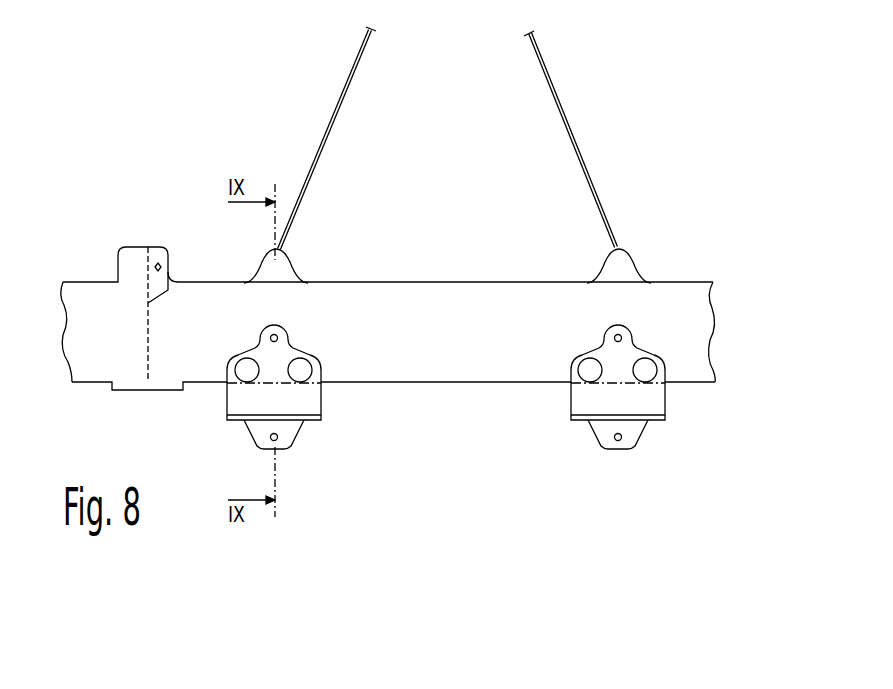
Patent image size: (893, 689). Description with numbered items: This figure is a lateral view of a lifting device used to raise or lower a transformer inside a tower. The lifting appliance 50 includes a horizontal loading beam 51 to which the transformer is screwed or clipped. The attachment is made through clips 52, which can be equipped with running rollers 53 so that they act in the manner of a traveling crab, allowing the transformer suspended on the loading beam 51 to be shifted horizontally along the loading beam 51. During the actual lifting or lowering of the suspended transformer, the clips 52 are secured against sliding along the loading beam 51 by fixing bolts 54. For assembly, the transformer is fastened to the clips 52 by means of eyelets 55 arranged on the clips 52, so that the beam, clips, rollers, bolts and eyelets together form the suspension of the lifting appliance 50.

The lifting appliance 50 is at (585, 157).
The loading beam 51 is at (690, 363).
The clips 52 is at (580, 395).
The running rollers 53 is at (645, 372).
The fixing bolts 54 is at (618, 338).
The eyelets 55 is at (615, 447).